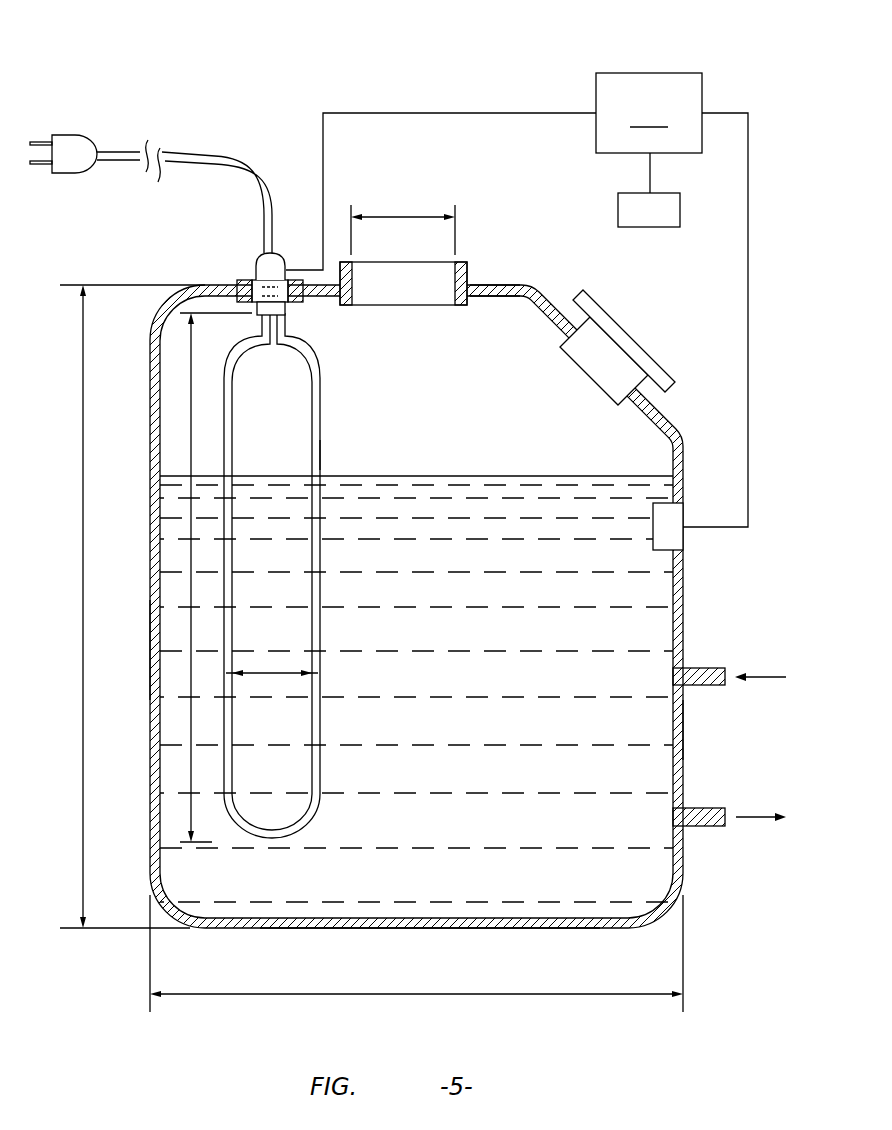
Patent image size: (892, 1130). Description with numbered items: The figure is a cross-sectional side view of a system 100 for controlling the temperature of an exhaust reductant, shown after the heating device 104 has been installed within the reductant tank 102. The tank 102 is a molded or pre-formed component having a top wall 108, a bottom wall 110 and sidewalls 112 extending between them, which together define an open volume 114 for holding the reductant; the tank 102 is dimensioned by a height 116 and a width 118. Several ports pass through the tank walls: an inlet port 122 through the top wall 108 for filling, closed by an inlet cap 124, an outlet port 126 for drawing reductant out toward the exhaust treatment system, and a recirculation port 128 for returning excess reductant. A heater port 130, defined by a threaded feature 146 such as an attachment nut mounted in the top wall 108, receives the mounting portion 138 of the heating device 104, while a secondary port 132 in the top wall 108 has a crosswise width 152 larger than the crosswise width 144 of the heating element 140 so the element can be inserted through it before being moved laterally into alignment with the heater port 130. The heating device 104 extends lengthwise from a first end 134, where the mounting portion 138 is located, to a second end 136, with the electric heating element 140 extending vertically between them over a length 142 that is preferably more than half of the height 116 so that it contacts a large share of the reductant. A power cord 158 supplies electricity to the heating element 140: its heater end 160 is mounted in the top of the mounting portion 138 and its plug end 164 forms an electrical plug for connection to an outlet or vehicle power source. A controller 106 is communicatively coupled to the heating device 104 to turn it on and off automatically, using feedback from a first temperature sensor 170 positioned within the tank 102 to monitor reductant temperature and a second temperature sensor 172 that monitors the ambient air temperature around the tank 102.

The system 100 is at (226, 68).
The reductant tank 102 is at (125, 302).
The heating device 104 is at (334, 378).
The controller 106 is at (649, 113).
The top wall 108 is at (520, 295).
The bottom wall 110 is at (357, 930).
The sidewalls 112 is at (152, 667).
The open volume 114 is at (609, 722).
The height 116 is at (83, 532).
The width 118 is at (260, 996).
The inlet port 122 is at (588, 357).
The inlet cap 124 is at (622, 325).
The outlet port 126 is at (698, 828).
The recirculation port 128 is at (698, 668).
The heater port 130 is at (240, 292).
The secondary port 132 is at (418, 290).
The first end 134 is at (252, 280).
The second end 136 is at (270, 840).
The mounting portion 138 is at (291, 278).
The electric heating element 140 is at (320, 460).
The length 142 is at (190, 424).
The crosswise width 144 is at (270, 678).
The threaded feature 146 is at (303, 303).
The crosswise width 152 is at (400, 212).
The power cord 158 is at (188, 150).
The heater end 160 is at (263, 258).
The plug end 164 is at (70, 145).
The first temperature sensor 170 is at (660, 538).
The second temperature sensor 172 is at (652, 227).